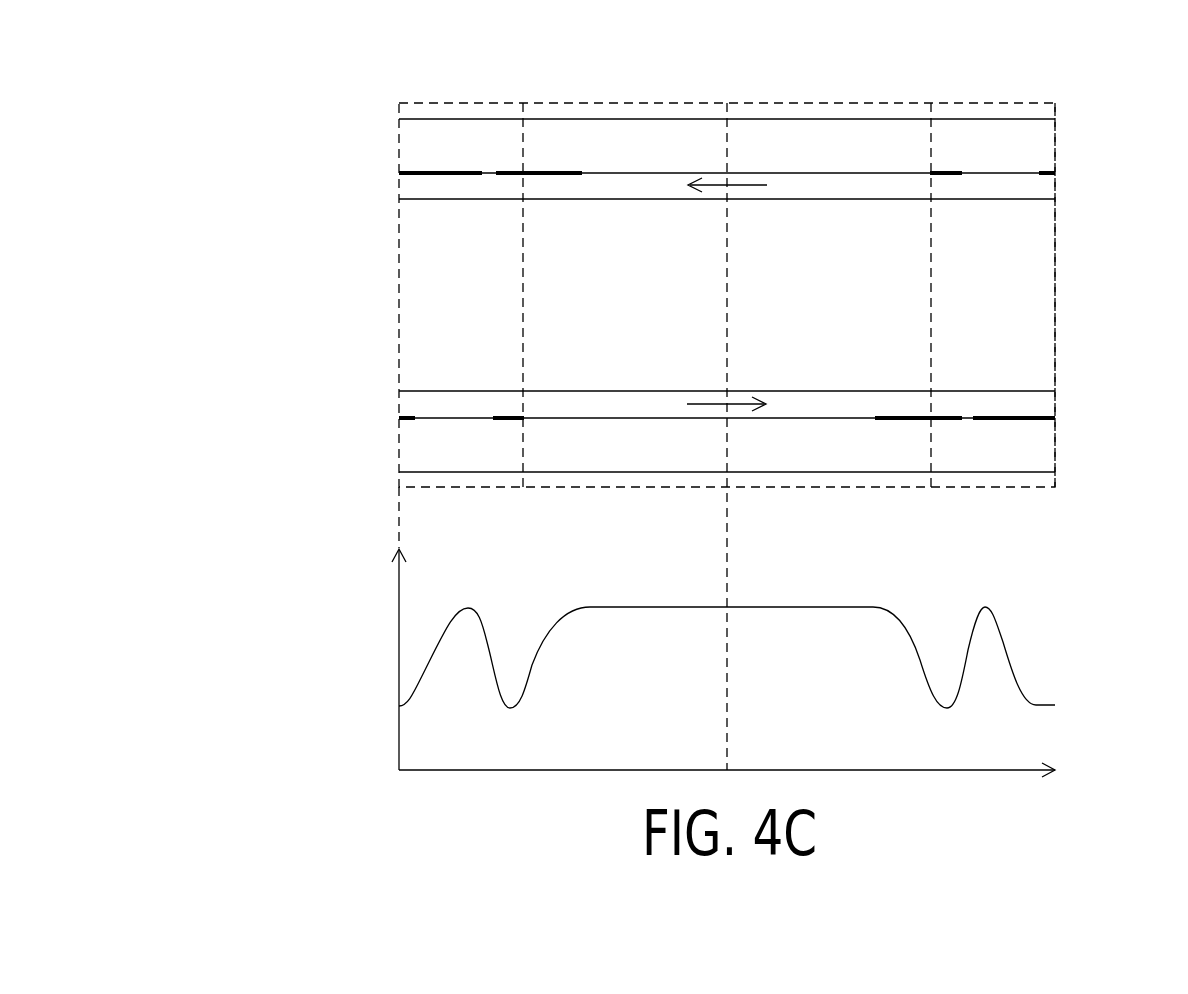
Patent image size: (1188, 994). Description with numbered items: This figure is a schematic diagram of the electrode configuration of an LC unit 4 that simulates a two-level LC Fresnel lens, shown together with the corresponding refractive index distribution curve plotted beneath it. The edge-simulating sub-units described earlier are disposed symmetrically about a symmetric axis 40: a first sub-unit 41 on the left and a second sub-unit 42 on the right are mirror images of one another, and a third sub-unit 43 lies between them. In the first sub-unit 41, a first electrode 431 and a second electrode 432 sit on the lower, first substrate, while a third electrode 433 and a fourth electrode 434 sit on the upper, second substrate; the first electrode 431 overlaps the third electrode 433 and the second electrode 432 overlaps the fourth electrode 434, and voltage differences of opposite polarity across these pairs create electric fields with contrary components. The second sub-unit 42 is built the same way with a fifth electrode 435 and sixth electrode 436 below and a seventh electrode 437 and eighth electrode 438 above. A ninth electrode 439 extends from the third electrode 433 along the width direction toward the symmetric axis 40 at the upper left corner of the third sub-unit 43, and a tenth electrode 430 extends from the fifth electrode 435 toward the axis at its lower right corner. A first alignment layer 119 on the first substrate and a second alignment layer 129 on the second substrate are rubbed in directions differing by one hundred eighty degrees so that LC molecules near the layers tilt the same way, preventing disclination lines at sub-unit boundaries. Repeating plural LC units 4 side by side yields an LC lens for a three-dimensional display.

The LC unit 4 is at (285, 82).
The symmetric axis 40 is at (726, 148).
The first sub-unit 41 is at (495, 103).
The second sub-unit 42 is at (1028, 103).
The third sub-unit 43 is at (782, 103).
The first alignment layer 119 is at (1047, 405).
The second alignment layer 129 is at (1047, 186).
The tenth electrode 430 is at (903, 420).
The first electrode 431 is at (511, 420).
The second electrode 432 is at (408, 415).
The third electrode 433 is at (512, 174).
The fourth electrode 434 is at (433, 170).
The fifth electrode 435 is at (947, 417).
The sixth electrode 436 is at (1017, 420).
The seventh electrode 437 is at (948, 170).
The eighth electrode 438 is at (1046, 171).
The ninth electrode 439 is at (566, 170).